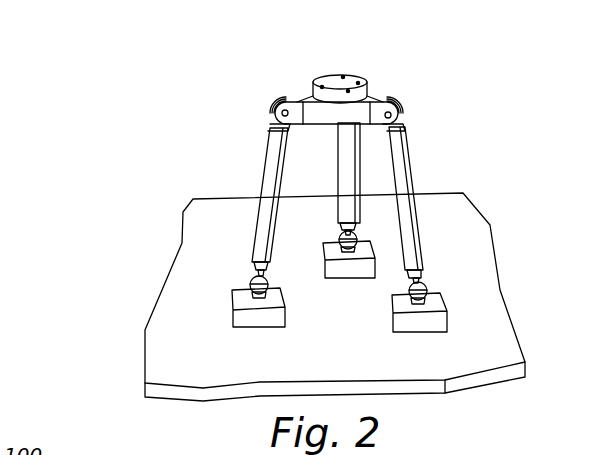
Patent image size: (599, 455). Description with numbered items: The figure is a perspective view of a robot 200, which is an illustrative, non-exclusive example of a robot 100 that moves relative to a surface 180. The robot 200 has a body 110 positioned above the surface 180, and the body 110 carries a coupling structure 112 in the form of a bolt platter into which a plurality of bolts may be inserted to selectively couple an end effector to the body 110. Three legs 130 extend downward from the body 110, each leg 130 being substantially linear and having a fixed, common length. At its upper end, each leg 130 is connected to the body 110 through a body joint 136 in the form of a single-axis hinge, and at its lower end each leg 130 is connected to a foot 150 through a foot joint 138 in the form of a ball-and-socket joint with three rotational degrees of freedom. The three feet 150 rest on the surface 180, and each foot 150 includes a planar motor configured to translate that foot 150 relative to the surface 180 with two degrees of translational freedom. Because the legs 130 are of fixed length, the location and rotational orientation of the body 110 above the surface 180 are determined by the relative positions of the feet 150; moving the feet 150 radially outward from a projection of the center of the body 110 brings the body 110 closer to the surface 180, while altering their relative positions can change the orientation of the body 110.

The robot 100 is at (139, 45).
The robot 200 is at (192, 100).
The body 110 is at (303, 91).
The coupling structure 112 is at (366, 81).
The leg 130 is at (392, 207).
The body joint 136 is at (296, 118).
The foot joint 138 is at (339, 237).
The foot 150 is at (291, 318).
The surface 180 is at (175, 347).